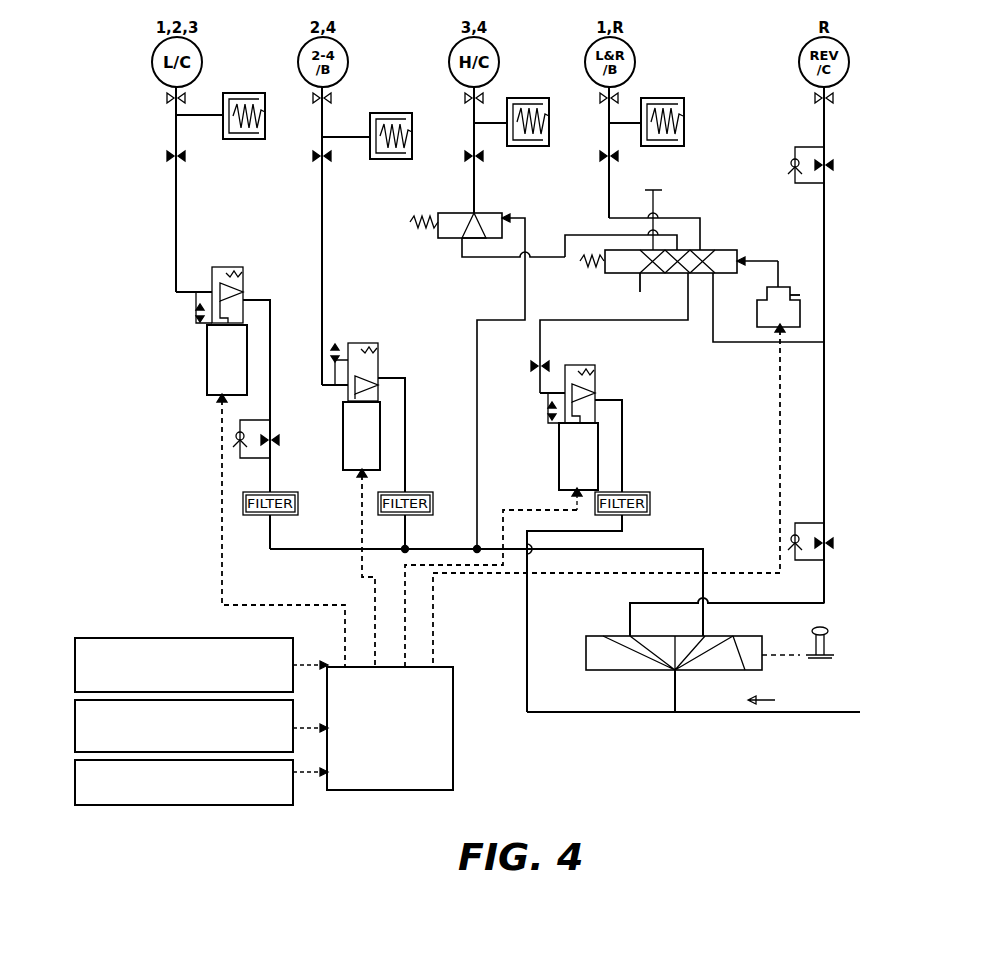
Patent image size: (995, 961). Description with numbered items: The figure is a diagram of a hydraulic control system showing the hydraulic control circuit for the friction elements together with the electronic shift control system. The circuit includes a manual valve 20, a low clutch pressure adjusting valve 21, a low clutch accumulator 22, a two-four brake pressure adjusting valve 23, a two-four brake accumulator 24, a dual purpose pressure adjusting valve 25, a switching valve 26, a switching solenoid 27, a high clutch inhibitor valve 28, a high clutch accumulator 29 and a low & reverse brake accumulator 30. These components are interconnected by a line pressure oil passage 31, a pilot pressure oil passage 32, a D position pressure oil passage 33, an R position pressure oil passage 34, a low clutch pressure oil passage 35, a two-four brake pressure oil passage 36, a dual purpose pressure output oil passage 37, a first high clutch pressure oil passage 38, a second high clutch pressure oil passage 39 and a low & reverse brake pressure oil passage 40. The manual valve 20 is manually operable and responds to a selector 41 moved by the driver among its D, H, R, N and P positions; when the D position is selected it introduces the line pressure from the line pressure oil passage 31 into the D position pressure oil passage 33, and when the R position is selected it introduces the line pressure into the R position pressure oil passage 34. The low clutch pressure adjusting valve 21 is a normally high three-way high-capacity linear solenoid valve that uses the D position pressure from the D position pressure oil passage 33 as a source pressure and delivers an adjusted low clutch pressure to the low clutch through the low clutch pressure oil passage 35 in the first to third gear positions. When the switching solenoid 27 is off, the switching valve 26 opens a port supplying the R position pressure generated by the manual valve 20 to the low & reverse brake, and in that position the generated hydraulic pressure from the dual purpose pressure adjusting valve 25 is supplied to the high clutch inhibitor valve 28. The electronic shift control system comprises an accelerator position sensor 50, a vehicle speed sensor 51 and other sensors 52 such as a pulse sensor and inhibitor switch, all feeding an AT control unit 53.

The manual valve 20 is at (586, 654).
The low clutch pressure adjusting valve 21 is at (207, 360).
The low clutch accumulator 22 is at (243, 140).
The 2-4 brake pressure adjusting valve 23 is at (344, 438).
The 2-4 brake accumulator 24 is at (390, 160).
The dual purpose pressure adjusting valve 25 is at (560, 468).
The switching valve 26 is at (700, 250).
The switching solenoid 27 is at (757, 310).
The high clutch inhibitor valve 28 is at (456, 213).
The high clutch accumulator 29 is at (530, 97).
The low & reverse brake accumulator 30 is at (670, 146).
The line pressure oil passage 31 is at (733, 713).
The pilot pressure oil passage 32 is at (638, 286).
The D position pressure oil passage 33 is at (703, 548).
The R position pressure oil passage 34 is at (811, 588).
The low clutch pressure oil passage 35 is at (177, 210).
The 2-4 brake pressure oil passage 36 is at (323, 270).
The dual purpose pressure output oil passage 37 is at (688, 325).
The first high clutch pressure oil passage 38 is at (567, 234).
The second high clutch pressure oil passage 39 is at (476, 206).
The low & reverse brake pressure oil passage 40 is at (610, 200).
The selector 41 is at (828, 632).
The accelerator position sensor 50 is at (75, 672).
The vehicle speed sensor 51 is at (75, 730).
The other sensors 52 is at (75, 785).
The AT control unit 53 is at (453, 738).